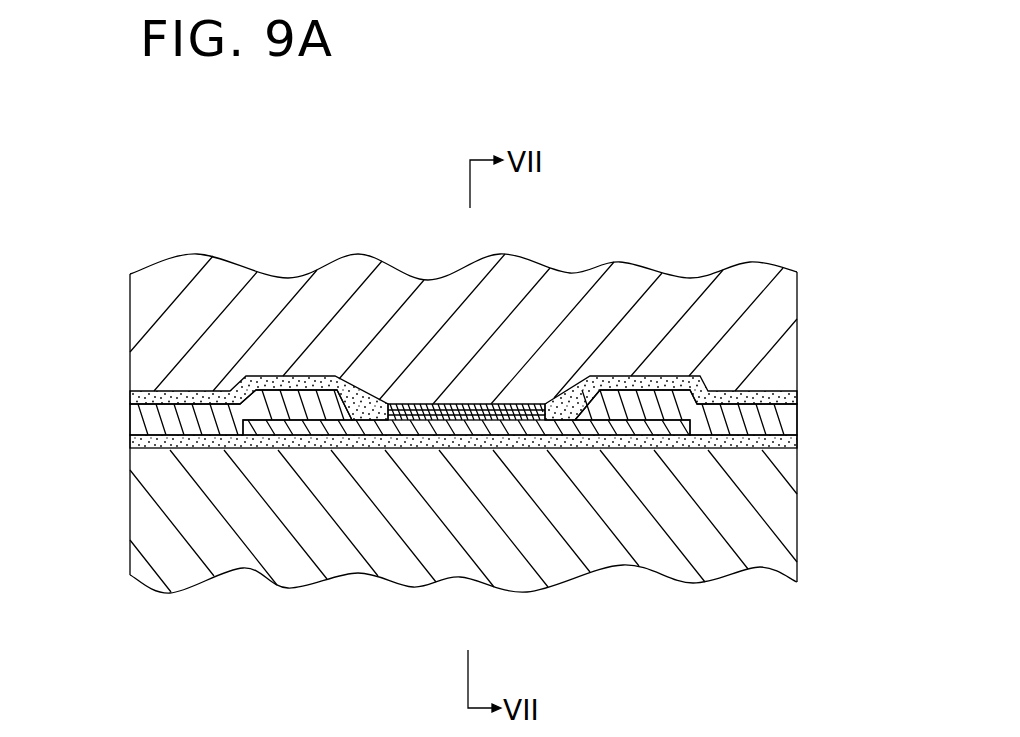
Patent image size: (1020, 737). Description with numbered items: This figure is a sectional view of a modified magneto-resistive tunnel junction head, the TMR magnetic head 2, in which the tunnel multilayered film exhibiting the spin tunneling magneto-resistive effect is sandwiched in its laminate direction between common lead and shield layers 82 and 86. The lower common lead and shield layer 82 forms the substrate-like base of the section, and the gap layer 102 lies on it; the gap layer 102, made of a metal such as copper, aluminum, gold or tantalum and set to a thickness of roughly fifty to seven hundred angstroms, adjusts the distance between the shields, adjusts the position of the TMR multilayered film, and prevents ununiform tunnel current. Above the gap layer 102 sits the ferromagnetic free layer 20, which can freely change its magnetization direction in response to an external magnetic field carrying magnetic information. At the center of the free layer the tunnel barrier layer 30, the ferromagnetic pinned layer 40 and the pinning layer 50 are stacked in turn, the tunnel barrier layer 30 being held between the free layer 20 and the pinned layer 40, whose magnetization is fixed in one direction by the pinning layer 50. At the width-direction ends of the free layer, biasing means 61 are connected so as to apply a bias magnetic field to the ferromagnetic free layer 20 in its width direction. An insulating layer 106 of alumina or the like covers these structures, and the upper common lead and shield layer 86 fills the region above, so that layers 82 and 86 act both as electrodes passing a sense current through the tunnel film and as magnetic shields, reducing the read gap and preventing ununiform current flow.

The TMR magnetic head 2 is at (716, 194).
The ferromagnetic free layer 20 is at (243, 424).
The tunnel barrier layer 30 is at (373, 416).
The ferromagnetic pinned layer 40 is at (384, 412).
The pinning layer 50 is at (394, 408).
The biasing means 61 is at (136, 428).
The common lead and shield layer 82 is at (794, 487).
The common lead and shield layer 86 is at (788, 338).
The gap layer 102 is at (790, 447).
The insulating layer 106 is at (796, 397).